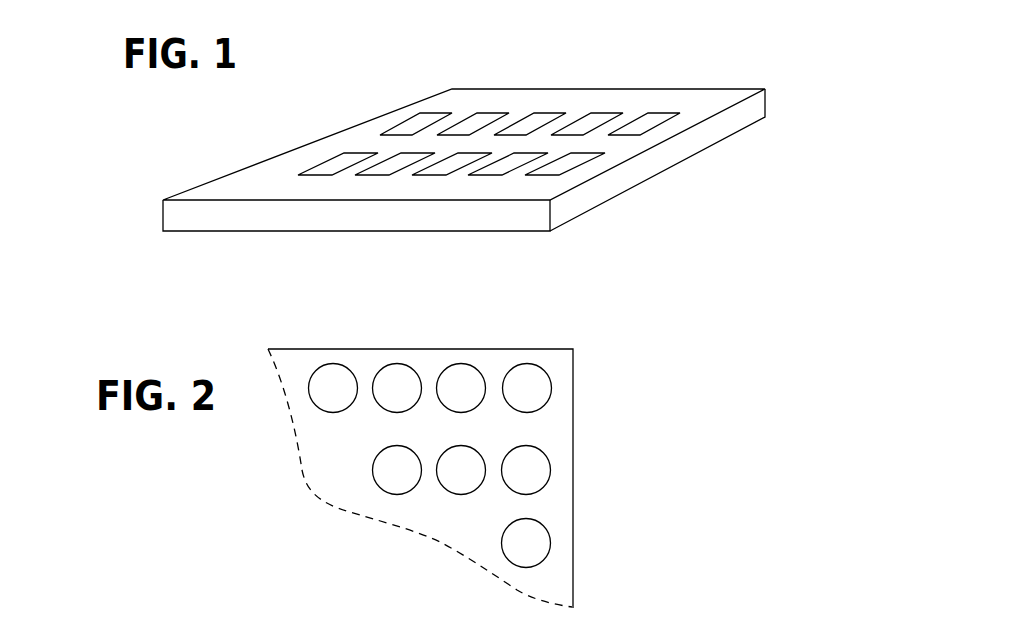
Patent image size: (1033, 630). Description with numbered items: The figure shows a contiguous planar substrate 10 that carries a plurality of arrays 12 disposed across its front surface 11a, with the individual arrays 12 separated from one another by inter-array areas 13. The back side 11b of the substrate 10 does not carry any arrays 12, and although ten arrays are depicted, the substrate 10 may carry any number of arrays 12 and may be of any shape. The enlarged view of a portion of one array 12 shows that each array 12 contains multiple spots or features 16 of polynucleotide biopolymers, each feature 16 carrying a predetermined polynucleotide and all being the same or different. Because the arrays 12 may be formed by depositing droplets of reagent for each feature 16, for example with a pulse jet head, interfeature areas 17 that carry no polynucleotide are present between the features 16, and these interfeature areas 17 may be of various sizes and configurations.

In FIG. 1, the substrate 10 is at (630, 187).
In FIG. 1, the front surface 11a is at (242, 183).
In FIG. 1, the back side 11b is at (212, 233).
In FIG. 1, the array 12 is at (348, 155).
In FIG. 2, the array 12 is at (557, 575).
In FIG. 1, the inter-array area 13 is at (460, 177).
In FIG. 2, the feature 16 is at (373, 472).
In FIG. 2, the interfeature area 17 is at (428, 380).